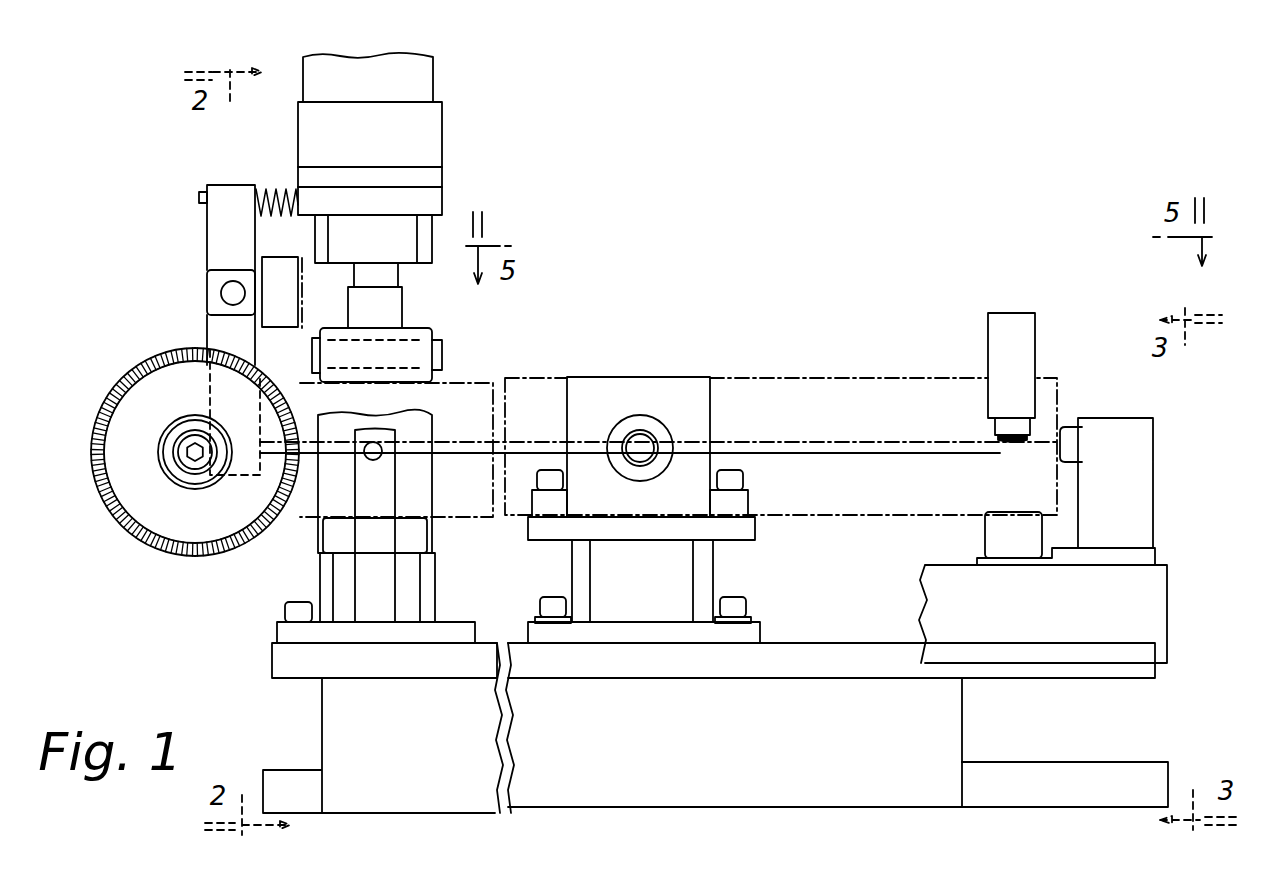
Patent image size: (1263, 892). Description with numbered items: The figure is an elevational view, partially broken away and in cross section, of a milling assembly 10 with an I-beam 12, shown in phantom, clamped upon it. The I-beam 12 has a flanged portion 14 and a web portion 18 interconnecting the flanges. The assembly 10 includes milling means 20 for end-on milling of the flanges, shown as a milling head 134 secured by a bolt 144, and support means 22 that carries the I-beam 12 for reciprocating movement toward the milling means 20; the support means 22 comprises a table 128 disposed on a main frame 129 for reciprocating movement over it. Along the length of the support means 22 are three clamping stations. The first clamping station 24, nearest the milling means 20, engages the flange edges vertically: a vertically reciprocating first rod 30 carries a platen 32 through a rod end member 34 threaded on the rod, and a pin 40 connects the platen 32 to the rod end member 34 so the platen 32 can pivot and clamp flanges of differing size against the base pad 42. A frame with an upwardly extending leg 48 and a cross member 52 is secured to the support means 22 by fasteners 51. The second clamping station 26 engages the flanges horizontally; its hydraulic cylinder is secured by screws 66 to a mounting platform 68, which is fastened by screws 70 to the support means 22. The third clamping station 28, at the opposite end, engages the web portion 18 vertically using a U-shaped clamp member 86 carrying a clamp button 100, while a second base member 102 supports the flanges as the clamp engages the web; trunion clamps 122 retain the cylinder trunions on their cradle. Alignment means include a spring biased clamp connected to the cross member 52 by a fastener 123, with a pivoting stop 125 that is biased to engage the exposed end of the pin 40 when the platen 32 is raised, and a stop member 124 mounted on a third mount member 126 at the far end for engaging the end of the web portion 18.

The milling assembly 10 is at (625, 350).
The I-beam 12 is at (790, 380).
The flanged portion 14 is at (877, 388).
The web portion 18 is at (800, 445).
The milling means 20 is at (138, 347).
The support means 22 is at (312, 709).
The first clamping station 24 is at (307, 572).
The second clamping station 26 is at (670, 366).
The third clamping station 28 is at (1046, 352).
The first rod 30 is at (383, 276).
The platen 32 is at (420, 335).
The rod end member 34 is at (390, 297).
The pin 40 is at (312, 352).
The base pad 42 is at (410, 538).
The leg 48 is at (382, 480).
The fasteners 51 is at (284, 607).
The cross member 52 is at (425, 198).
The screws 66 is at (541, 468).
The mounting platform 68 is at (632, 528).
The screws 70 is at (552, 600).
The U-shaped clamp member 86 is at (973, 338).
The clamp button 100 is at (1015, 441).
The second base member 102 is at (985, 538).
The trunion clamps 122 is at (220, 237).
The fastener 123 is at (199, 197).
The stop member 124 is at (1068, 437).
The stop 125 is at (292, 280).
The third mount member 126 is at (1130, 455).
The table 128 is at (935, 712).
The main frame 129 is at (1148, 772).
The milling heads 134 is at (210, 520).
The bolt 144 is at (192, 462).